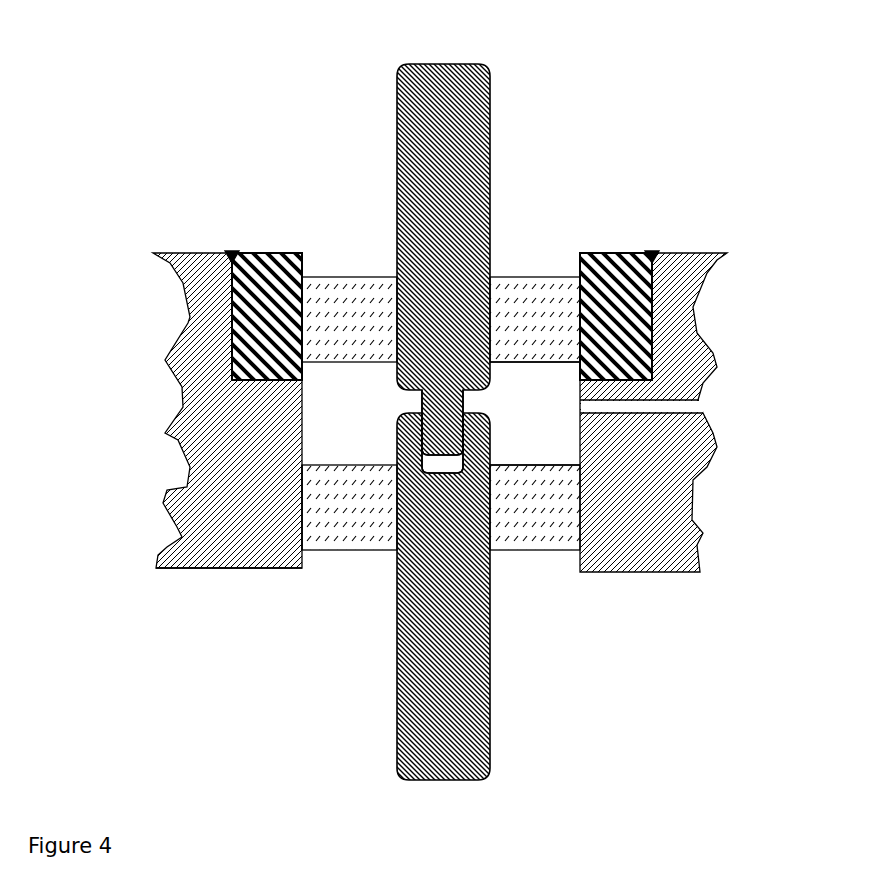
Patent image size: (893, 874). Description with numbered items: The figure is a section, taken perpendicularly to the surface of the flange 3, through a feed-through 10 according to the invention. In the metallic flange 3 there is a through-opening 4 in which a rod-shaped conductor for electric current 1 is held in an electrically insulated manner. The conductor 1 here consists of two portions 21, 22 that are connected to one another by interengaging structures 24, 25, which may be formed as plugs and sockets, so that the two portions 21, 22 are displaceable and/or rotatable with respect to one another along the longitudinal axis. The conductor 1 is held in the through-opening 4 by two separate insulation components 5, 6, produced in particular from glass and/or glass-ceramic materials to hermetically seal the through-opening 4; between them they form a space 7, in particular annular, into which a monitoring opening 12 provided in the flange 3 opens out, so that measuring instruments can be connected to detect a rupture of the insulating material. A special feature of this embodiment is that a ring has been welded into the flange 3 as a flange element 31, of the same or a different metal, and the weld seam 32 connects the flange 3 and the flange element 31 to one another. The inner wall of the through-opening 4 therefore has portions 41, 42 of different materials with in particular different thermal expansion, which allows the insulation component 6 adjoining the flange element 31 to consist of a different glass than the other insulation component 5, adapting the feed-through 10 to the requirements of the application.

The conductor for electric current 1 is at (330, 400).
The first conductor portion 21 is at (497, 145).
The second conductor portion 22 is at (495, 650).
The interengaging structure 24 is at (405, 462).
The interengaging structure 25 is at (432, 433).
The flange 3 is at (190, 253).
The flange element 31 is at (270, 253).
The weld seam 32 is at (232, 253).
The through-opening 4 is at (451, 397).
The inner wall portion 41 is at (308, 533).
The inner wall portion 42 is at (312, 272).
The insulation component 5 is at (350, 540).
The insulation component 6 is at (345, 270).
The space 7 is at (563, 441).
The feed-through 10 is at (275, 607).
The monitoring opening 12 is at (697, 408).